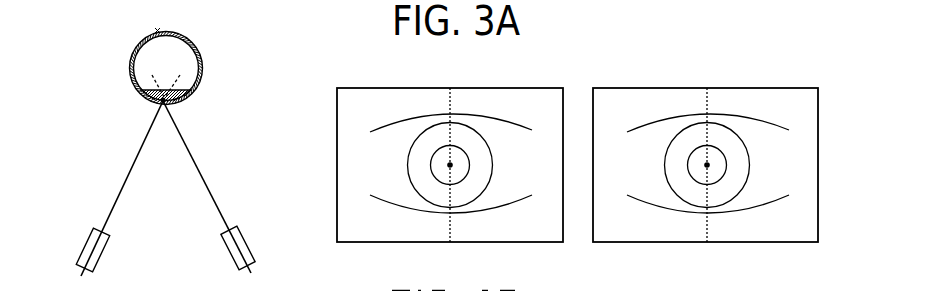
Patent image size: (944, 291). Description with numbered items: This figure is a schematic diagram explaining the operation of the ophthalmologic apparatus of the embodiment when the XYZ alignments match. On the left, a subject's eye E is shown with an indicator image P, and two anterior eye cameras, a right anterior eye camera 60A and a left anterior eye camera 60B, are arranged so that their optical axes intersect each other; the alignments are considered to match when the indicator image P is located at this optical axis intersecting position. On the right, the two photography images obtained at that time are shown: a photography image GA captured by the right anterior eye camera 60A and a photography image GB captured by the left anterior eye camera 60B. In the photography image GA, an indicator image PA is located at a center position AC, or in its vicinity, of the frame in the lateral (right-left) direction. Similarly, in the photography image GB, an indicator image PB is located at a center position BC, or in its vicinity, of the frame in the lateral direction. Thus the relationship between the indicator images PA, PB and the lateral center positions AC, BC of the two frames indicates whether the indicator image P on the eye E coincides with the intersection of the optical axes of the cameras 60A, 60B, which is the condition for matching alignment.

The eye E is at (200, 56).
The indicator image P is at (176, 105).
The right anterior eye camera 60A is at (252, 238).
The left anterior eye camera 60B is at (106, 241).
The photography image GB is at (528, 88).
The photography image GA is at (783, 88).
The center position BC is at (451, 104).
The center position AC is at (709, 104).
The indicator image PB is at (450, 165).
The indicator image PA is at (707, 165).